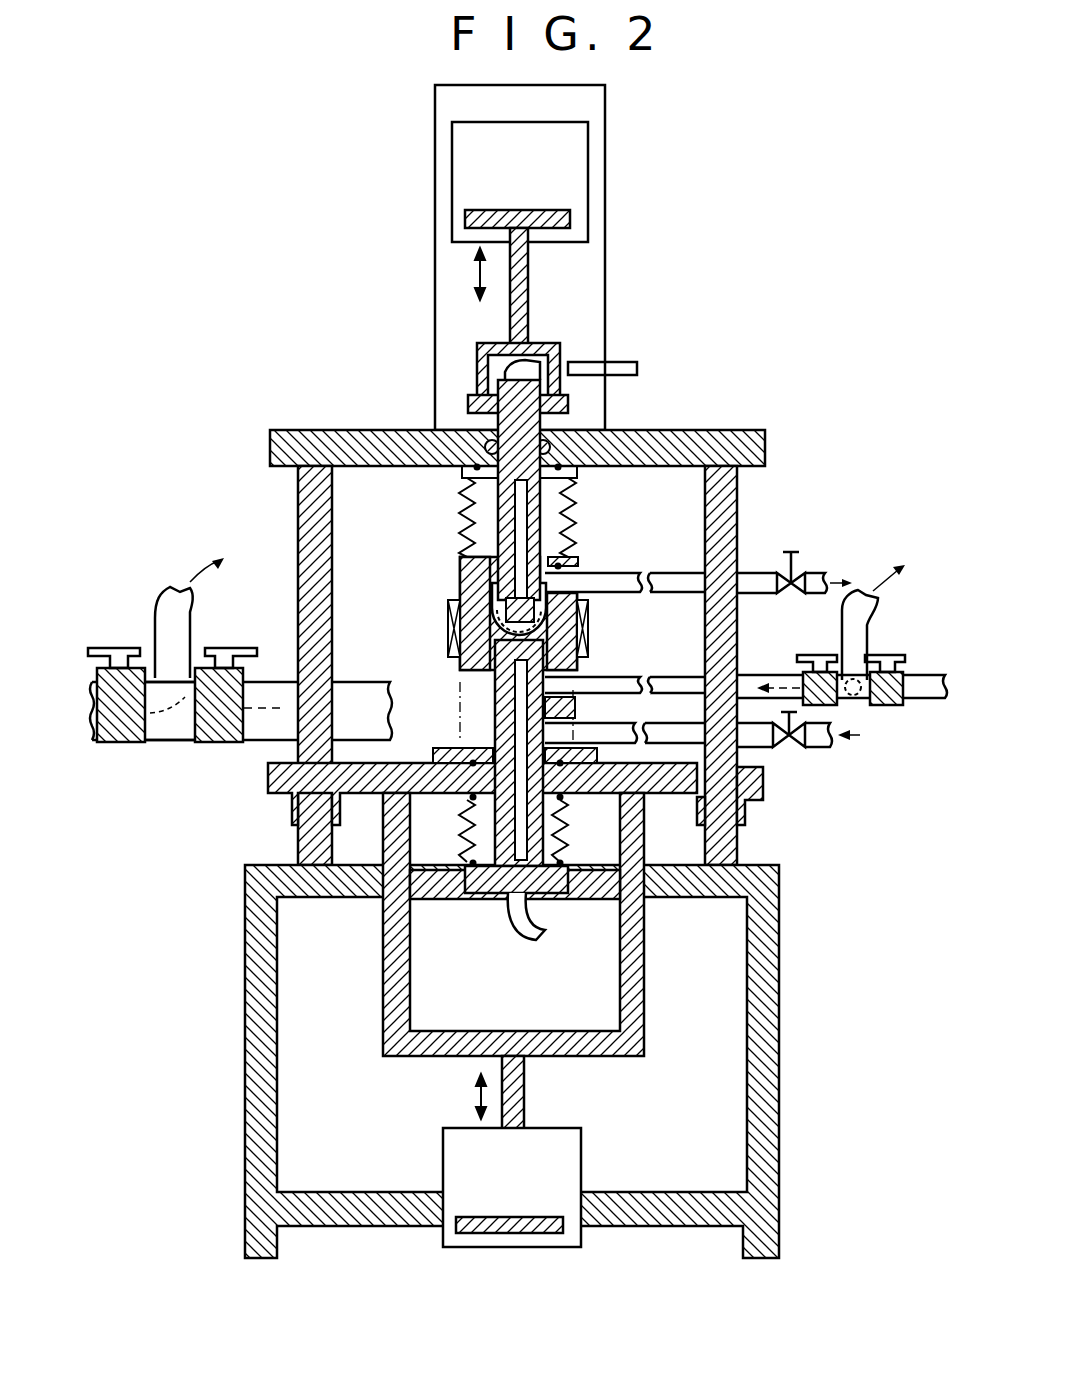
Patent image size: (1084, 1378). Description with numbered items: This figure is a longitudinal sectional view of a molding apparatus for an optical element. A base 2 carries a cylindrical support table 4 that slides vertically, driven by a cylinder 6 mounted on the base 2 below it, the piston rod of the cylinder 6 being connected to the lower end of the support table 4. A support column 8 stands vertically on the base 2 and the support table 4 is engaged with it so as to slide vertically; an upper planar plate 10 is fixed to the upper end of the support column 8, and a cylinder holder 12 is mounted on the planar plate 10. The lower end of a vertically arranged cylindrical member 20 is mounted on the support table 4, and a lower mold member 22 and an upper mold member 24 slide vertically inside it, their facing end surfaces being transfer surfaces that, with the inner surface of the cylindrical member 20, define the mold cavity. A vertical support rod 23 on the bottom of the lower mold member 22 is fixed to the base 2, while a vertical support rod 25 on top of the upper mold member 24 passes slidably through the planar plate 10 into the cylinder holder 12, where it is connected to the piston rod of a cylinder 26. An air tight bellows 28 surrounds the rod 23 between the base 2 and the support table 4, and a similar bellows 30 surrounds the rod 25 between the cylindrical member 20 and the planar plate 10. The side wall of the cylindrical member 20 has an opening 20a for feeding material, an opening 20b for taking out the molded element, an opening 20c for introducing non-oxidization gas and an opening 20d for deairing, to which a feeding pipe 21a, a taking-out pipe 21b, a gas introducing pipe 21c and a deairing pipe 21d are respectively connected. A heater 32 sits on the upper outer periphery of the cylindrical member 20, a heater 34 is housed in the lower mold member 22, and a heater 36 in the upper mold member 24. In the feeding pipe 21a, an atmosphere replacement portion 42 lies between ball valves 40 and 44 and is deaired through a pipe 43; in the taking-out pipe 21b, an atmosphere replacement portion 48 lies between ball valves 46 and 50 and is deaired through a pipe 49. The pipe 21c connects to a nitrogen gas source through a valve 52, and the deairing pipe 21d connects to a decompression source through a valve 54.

The base 2 is at (780, 1122).
The cylindrical support table 4 is at (650, 798).
The cylinder 6 is at (567, 1162).
The support column 8 is at (298, 492).
The upper planar plate 10 is at (712, 428).
The cylinder holder 12 is at (597, 277).
The cylindrical member 20 is at (560, 636).
The opening for feeding a material 20a is at (575, 686).
The opening for taking out a molded optical element 20b is at (355, 800).
The opening for introducing a non-oxidization gas 20c is at (563, 740).
The opening for deairing 20d is at (568, 584).
The pipe for feeding the material 21a is at (752, 675).
The pipe for taking out the molded optical element 21b is at (342, 703).
The pipe for introducing the non-oxidization gas 21c is at (758, 740).
The pipe for deairing 21d is at (752, 578).
The lower mold member 22 is at (478, 628).
The vertical support rod 23 is at (533, 901).
The upper mold member 24 is at (505, 600).
The vertical support rod 25 is at (572, 510).
The cylinder 26 is at (572, 195).
The air tight bellows 28 is at (462, 826).
The air tight bellows 30 is at (462, 498).
The heater 32 is at (455, 605).
The heater 34 is at (492, 695).
The heater 36 is at (466, 587).
The ball valve 40 is at (820, 665).
The material feeding side atmosphere replacement portion 42 is at (868, 700).
The pipe for deairing 43 is at (848, 590).
The ball valve 44 is at (885, 668).
The ball valve 46 is at (233, 655).
The molded optical element taking out side atmosphere replacement portion 48 is at (173, 742).
The pipe for deairing 49 is at (162, 622).
The ball valve 50 is at (121, 668).
The valve 52 is at (795, 745).
The valve 54 is at (792, 565).